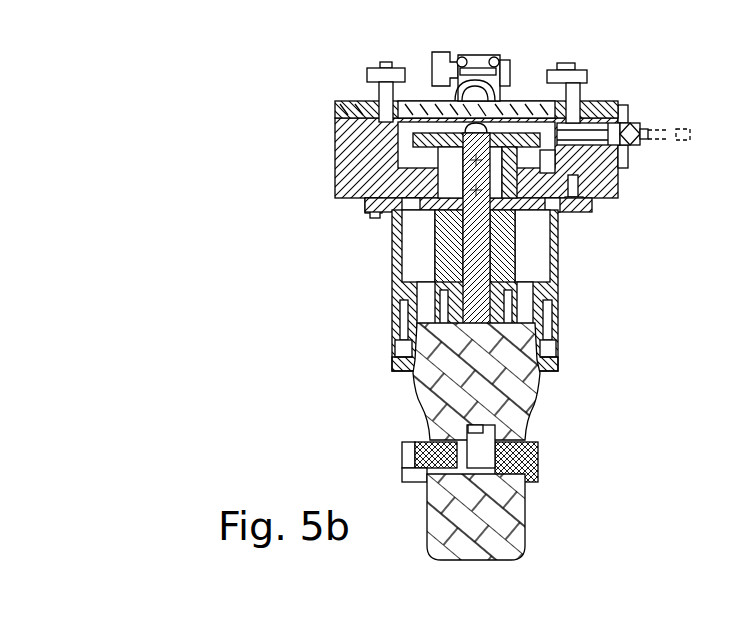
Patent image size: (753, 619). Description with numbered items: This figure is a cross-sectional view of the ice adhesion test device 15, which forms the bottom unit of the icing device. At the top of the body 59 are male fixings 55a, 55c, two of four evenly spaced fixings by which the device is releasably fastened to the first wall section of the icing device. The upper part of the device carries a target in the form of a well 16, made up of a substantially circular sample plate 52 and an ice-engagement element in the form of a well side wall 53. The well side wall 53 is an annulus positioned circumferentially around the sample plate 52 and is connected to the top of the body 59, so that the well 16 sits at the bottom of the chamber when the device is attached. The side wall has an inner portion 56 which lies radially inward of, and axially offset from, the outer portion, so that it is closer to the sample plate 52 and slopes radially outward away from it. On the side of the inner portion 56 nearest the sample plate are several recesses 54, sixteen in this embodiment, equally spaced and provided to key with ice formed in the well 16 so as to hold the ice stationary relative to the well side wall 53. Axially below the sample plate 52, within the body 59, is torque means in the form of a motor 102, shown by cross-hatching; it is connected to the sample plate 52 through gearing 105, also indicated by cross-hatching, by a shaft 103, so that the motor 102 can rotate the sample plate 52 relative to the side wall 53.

The ice adhesion test device 15 is at (158, 249).
The well 16 is at (488, 127).
The sample plate 52 is at (403, 143).
The well side wall 53 is at (437, 112).
The recesses 54 is at (500, 112).
The male fixing 55a is at (375, 68).
The male fixing 55c is at (590, 80).
The inner portion 56 is at (517, 100).
The body 59 is at (360, 146).
The motor 102 is at (510, 492).
The shaft 103 is at (487, 233).
The gearing 105 is at (508, 413).